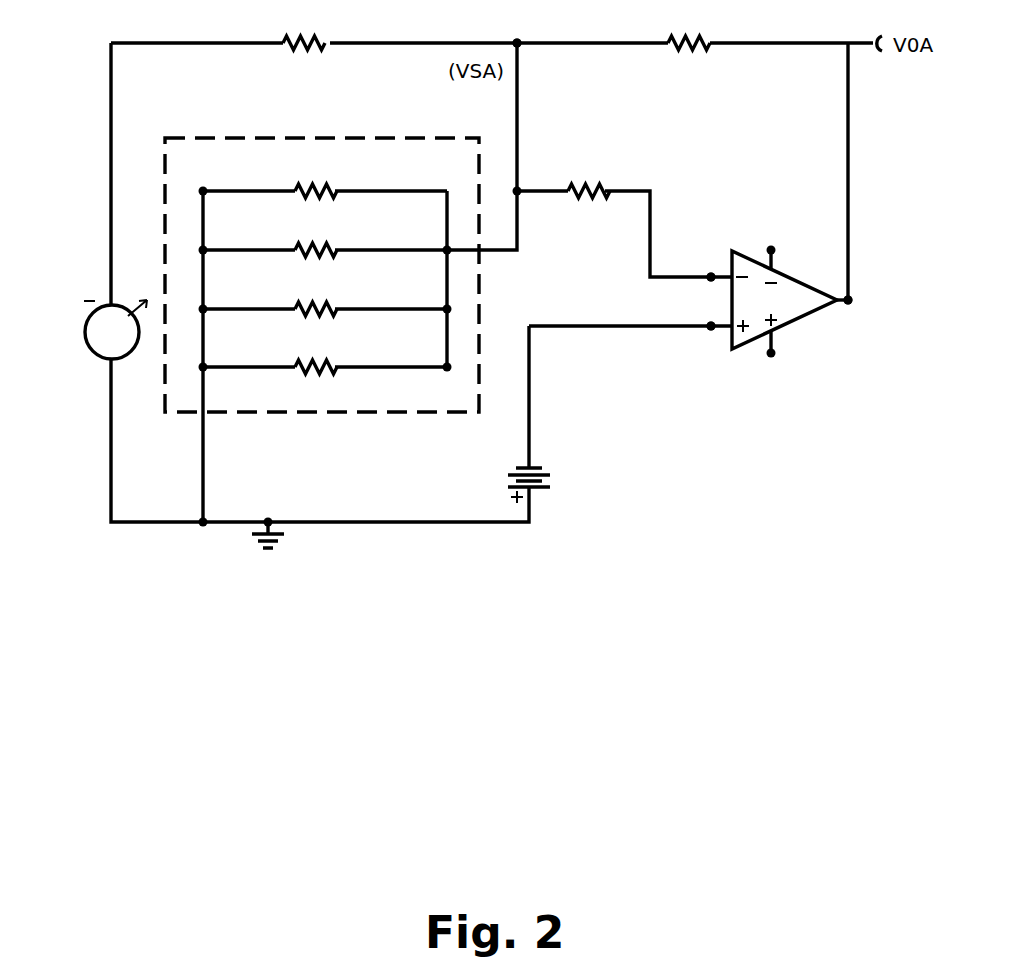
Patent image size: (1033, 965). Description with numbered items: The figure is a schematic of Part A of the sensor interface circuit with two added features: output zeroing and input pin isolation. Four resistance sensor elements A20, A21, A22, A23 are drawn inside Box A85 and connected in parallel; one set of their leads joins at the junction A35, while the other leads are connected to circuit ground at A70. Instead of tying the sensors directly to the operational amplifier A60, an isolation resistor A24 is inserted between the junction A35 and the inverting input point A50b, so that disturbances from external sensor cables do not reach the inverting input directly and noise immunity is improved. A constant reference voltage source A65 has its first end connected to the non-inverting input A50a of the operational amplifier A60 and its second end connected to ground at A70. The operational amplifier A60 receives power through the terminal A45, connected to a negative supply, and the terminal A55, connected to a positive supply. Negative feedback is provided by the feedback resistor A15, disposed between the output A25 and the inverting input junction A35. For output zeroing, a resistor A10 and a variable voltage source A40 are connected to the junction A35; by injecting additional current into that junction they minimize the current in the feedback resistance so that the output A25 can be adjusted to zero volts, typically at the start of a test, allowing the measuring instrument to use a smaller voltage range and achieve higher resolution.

The resistor A10 is at (283, 41).
The feedback resistor A15 is at (670, 41).
The resistance sensor element A20 is at (294, 190).
The resistance sensor element A21 is at (294, 249).
The resistance sensor element A22 is at (294, 308).
The resistance sensor element A23 is at (294, 366).
The resistor A24 is at (599, 189).
The output A25 is at (849, 298).
The junction A35 is at (520, 50).
The variable voltage source A40 is at (105, 356).
The terminal A45 is at (770, 249).
The non-inverting input A50a is at (706, 331).
The inverting input point A50b is at (706, 281).
The terminal A55 is at (772, 355).
The operational amplifier A60 is at (800, 319).
The constant reference voltage source A65 is at (542, 490).
The circuit ground A70 is at (275, 515).
The box A85 is at (275, 137).